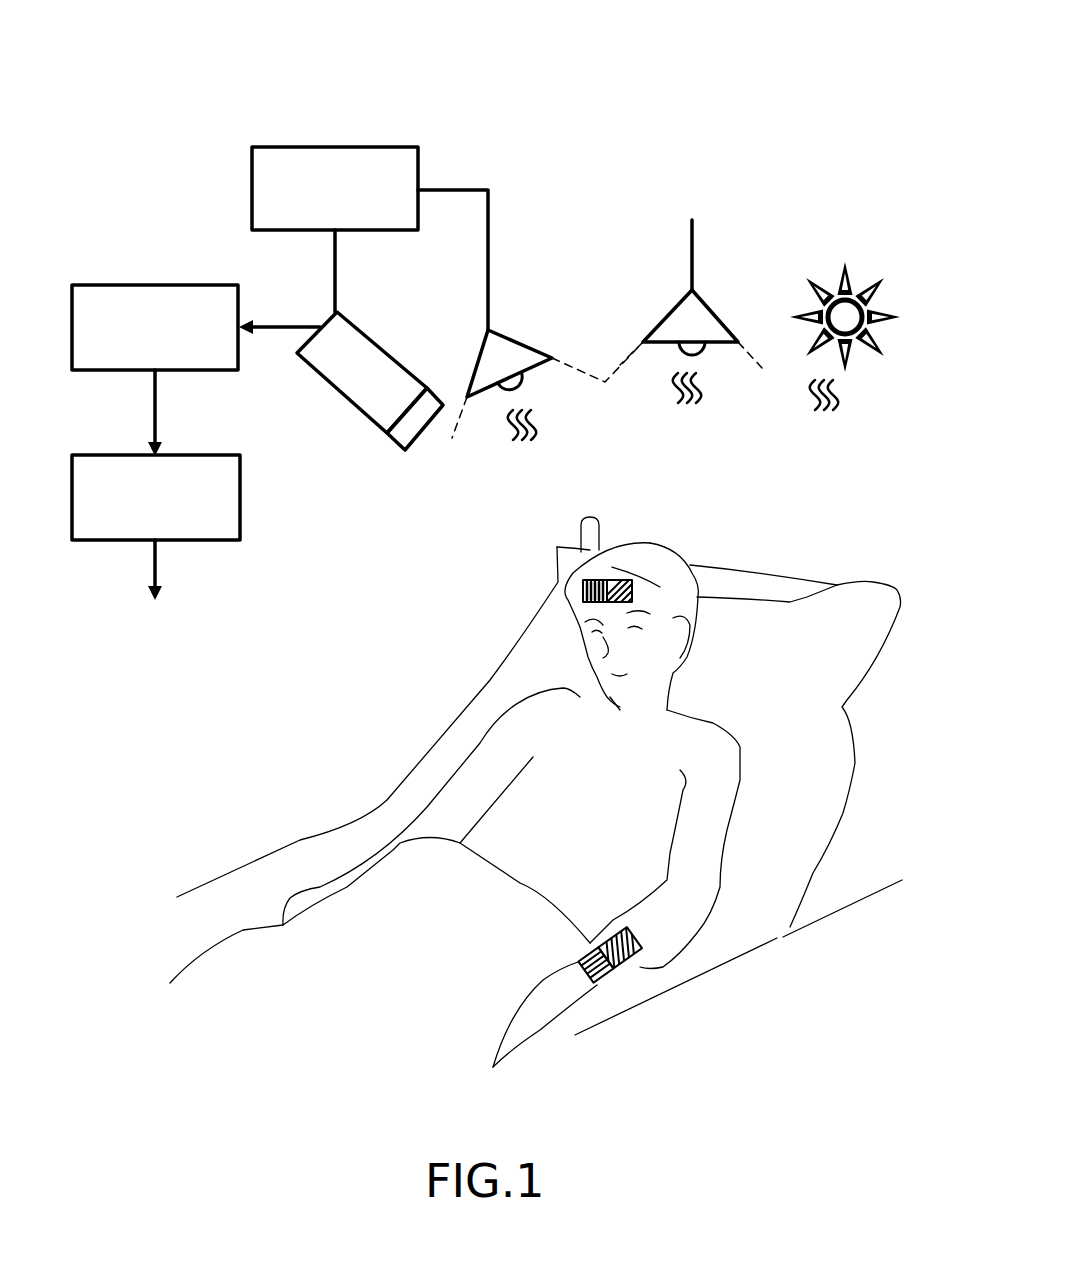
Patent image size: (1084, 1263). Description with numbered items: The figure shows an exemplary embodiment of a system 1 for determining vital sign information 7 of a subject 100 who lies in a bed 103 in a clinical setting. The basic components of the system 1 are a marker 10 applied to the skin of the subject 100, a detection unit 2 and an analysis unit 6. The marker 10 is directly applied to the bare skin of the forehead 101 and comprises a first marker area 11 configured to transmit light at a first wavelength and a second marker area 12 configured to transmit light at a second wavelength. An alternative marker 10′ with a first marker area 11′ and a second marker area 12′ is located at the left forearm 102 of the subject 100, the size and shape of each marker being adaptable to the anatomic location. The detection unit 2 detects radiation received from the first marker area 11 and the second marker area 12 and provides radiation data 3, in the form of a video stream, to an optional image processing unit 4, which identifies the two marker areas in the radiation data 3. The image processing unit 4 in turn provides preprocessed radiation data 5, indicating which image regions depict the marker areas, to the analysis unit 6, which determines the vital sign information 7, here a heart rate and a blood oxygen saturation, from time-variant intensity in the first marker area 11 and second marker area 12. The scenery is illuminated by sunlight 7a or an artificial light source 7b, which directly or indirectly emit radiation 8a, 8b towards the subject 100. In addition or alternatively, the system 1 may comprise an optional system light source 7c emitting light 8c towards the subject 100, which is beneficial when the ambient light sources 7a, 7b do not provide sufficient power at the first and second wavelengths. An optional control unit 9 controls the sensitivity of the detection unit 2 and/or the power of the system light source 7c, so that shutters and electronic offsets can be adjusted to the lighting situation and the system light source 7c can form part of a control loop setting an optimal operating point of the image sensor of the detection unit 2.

The system 1 is at (297, 96).
The detection unit 2 is at (373, 338).
The radiation data 3 is at (283, 328).
The image processing unit 4 is at (80, 287).
The preprocessed radiation data 5 is at (155, 405).
The analysis unit 6 is at (240, 501).
The vital sign information 7 is at (155, 565).
The sunlight 7a is at (857, 283).
The artificial light source 7b is at (692, 234).
The system light source 7c is at (488, 270).
The radiation 8a is at (840, 395).
The radiation 8b is at (703, 390).
The light 8c is at (535, 424).
The control unit 9 is at (420, 172).
The marker 10 is at (618, 524).
The first marker area 11 is at (583, 588).
The second marker area 12 is at (633, 590).
The alternative marker 10′ is at (680, 1016).
The first marker area 11′ is at (596, 965).
The second marker area 12′ is at (597, 982).
The subject 100 is at (617, 557).
The forehead 101 is at (643, 598).
The left forearm 102 is at (557, 997).
The bed 103 is at (417, 762).